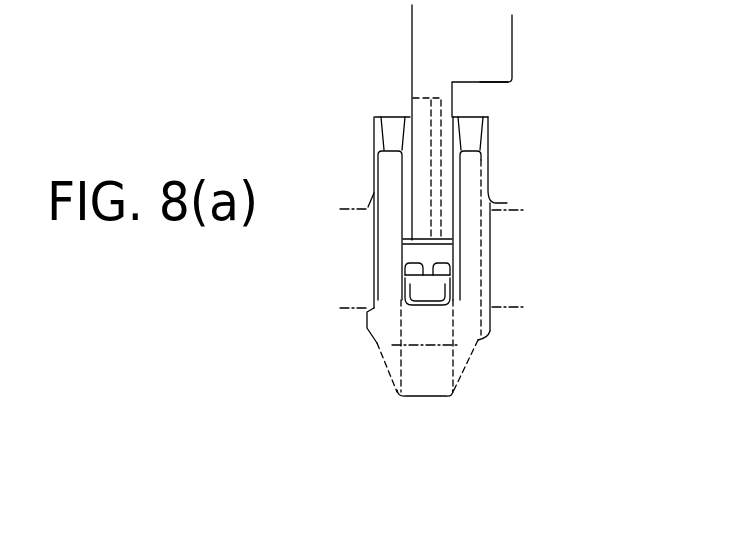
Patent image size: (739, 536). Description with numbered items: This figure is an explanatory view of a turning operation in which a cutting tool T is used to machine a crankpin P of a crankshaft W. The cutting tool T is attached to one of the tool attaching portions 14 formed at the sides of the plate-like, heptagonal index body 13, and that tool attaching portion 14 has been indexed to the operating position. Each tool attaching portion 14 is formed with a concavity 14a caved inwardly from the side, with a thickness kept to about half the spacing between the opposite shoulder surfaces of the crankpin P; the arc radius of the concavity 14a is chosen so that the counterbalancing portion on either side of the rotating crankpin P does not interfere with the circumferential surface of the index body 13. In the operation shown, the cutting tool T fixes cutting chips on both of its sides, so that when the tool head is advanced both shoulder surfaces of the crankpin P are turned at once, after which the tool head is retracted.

The tool attaching portion 14 is at (410, 104).
The index body 13 is at (493, 44).
The concavity 14a is at (496, 84).
The cutting tool T is at (436, 271).
The crankshaft W is at (502, 312).
The crankpin P is at (430, 368).